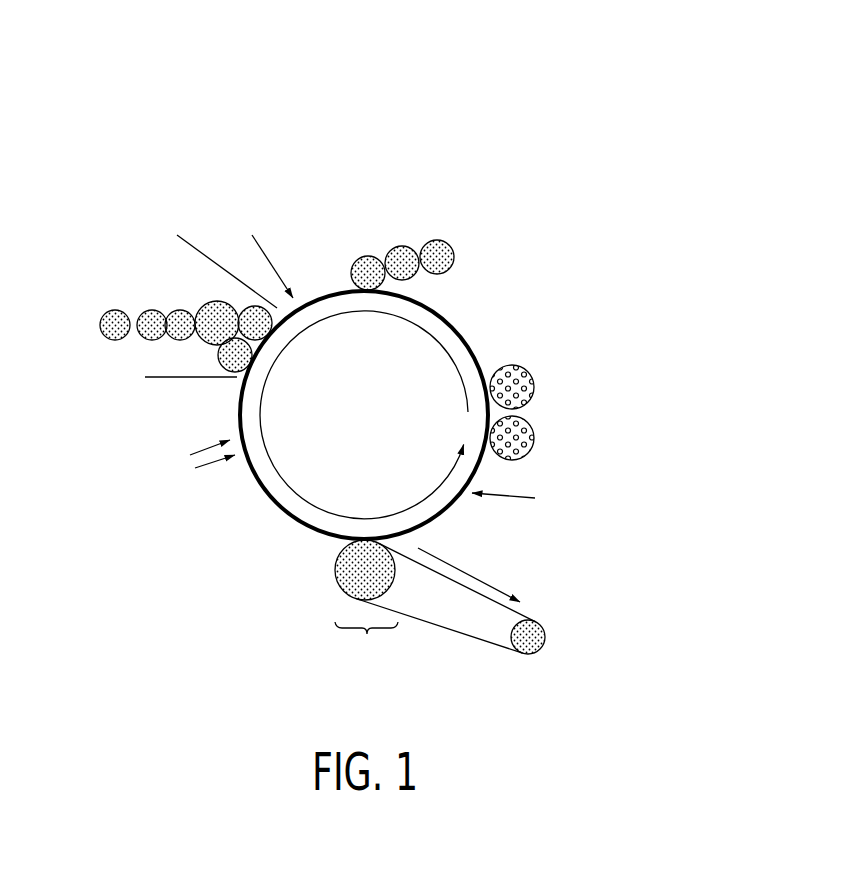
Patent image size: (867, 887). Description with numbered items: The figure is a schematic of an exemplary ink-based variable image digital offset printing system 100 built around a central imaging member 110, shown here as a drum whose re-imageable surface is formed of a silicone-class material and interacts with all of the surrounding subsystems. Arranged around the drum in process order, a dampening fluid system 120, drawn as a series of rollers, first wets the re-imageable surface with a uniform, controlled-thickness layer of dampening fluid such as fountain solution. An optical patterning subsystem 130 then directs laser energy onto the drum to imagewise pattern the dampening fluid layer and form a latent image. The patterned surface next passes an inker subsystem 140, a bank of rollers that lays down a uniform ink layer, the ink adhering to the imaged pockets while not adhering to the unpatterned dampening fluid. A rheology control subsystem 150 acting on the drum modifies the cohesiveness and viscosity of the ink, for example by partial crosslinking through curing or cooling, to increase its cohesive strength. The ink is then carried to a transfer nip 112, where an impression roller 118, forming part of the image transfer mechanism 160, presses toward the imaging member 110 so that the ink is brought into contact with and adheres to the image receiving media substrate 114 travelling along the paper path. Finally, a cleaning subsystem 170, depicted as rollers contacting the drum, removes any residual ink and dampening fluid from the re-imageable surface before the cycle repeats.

The digital offset printing system 100 is at (152, 83).
The imaging member 110 is at (473, 320).
The transfer nip 112 is at (335, 543).
The image receiving media substrate 114 is at (515, 582).
The impression roller 118 is at (337, 583).
The dampening fluid system 120 is at (437, 198).
The optical patterning subsystem 130 is at (288, 185).
The inker subsystem 140 is at (177, 268).
The rheology control subsystem 150 is at (122, 432).
The image transfer mechanism 160 is at (377, 637).
The cleaning subsystem 170 is at (598, 352).